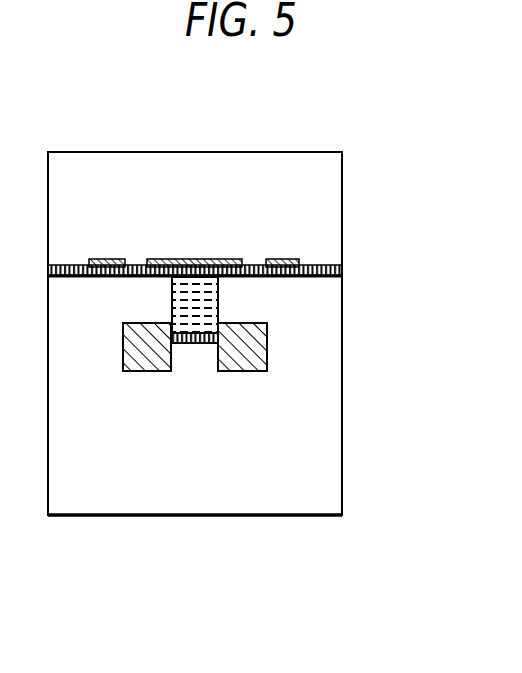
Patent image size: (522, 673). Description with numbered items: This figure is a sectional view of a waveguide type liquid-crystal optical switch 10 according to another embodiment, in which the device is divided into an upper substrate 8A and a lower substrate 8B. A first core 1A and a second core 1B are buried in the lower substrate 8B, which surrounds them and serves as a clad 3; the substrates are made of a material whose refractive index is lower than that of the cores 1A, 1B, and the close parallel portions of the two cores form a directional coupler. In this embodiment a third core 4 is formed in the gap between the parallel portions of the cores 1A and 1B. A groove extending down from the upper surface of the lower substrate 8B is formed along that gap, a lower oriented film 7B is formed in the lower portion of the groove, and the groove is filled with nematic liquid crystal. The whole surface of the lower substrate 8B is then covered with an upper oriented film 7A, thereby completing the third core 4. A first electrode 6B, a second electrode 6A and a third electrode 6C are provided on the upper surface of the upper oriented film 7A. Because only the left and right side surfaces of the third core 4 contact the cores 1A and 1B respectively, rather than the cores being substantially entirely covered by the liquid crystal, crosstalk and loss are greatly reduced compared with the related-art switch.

The waveguide type liquid-crystal optical switch 10 is at (387, 143).
The clad 3 is at (332, 505).
The upper substrate 8A is at (285, 172).
The lower substrate 8B is at (63, 505).
The upper oriented film 7A is at (343, 270).
The lower oriented film 7B is at (193, 344).
The second electrode 6A is at (110, 259).
The first electrode 6B is at (195, 259).
The third electrode 6C is at (284, 259).
The third core 4 is at (218, 298).
The first core 1A is at (122, 346).
The second core 1B is at (267, 347).